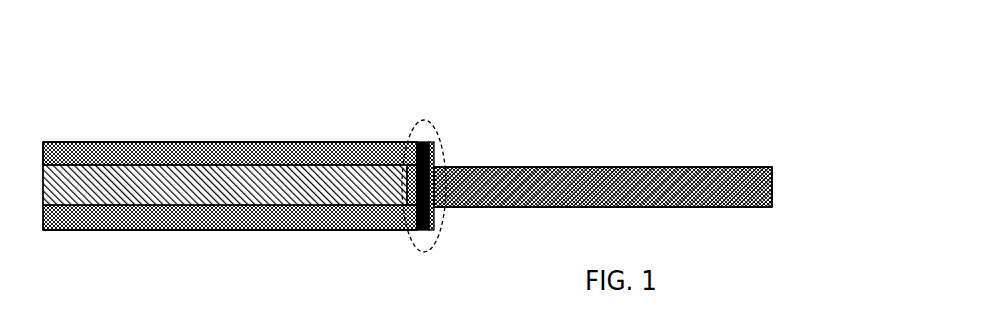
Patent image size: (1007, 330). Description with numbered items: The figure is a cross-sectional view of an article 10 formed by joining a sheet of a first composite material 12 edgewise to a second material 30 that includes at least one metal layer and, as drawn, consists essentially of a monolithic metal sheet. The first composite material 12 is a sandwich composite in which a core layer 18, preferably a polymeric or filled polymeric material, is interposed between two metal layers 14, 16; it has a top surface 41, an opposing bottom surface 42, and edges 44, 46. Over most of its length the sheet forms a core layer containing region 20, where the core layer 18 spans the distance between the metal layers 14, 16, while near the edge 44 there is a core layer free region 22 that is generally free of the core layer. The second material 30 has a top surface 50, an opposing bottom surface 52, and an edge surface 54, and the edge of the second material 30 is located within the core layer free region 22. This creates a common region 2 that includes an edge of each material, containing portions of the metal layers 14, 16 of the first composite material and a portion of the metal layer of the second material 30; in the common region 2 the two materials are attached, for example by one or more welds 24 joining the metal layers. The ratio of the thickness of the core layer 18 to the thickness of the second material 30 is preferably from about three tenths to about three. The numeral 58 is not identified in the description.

The article 10 is at (524, 39).
The core layer containing region 20 is at (403, 97).
The core layer free region 22 is at (432, 98).
The first composite material 12 is at (165, 152).
The metal layer 14 is at (110, 152).
The metal layer 16 is at (146, 218).
The core layer 18 is at (238, 172).
The edge 46 is at (50, 163).
The top surface 41 is at (366, 141).
The bottom surface 42 is at (293, 236).
The edge surface 54 is at (376, 195).
The weld 24 is at (421, 231).
The common region 2 is at (438, 233).
The edge 44 is at (436, 162).
The second material 30 is at (685, 190).
The top surface 50 is at (634, 166).
The bottom surface 52 is at (561, 211).
The end of second plate 58 is at (768, 190).